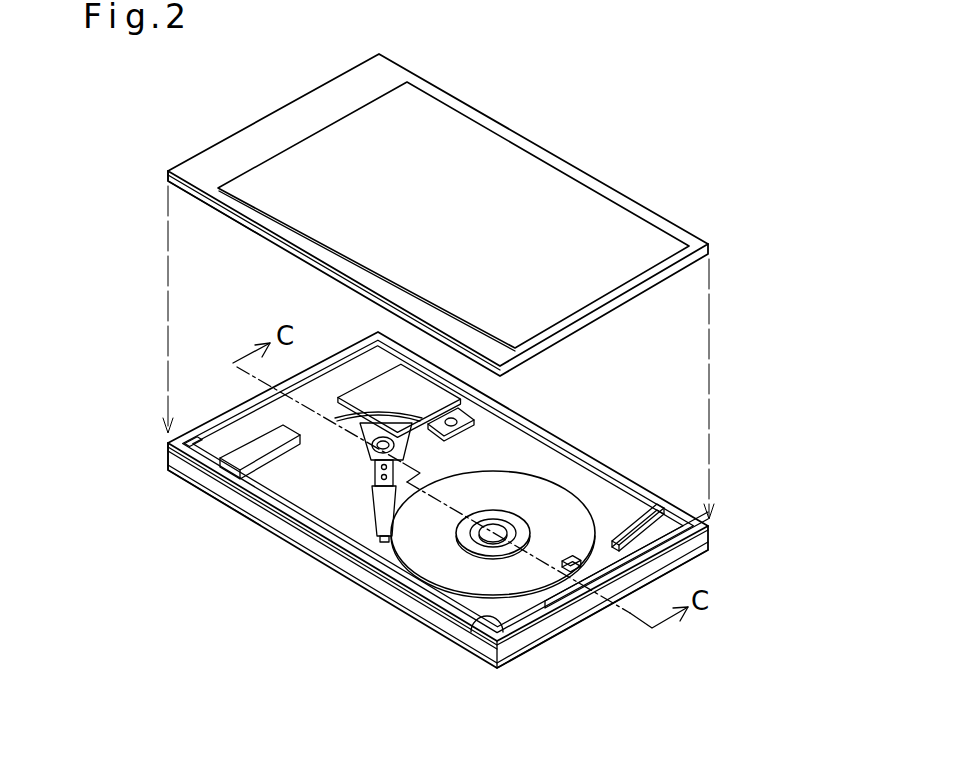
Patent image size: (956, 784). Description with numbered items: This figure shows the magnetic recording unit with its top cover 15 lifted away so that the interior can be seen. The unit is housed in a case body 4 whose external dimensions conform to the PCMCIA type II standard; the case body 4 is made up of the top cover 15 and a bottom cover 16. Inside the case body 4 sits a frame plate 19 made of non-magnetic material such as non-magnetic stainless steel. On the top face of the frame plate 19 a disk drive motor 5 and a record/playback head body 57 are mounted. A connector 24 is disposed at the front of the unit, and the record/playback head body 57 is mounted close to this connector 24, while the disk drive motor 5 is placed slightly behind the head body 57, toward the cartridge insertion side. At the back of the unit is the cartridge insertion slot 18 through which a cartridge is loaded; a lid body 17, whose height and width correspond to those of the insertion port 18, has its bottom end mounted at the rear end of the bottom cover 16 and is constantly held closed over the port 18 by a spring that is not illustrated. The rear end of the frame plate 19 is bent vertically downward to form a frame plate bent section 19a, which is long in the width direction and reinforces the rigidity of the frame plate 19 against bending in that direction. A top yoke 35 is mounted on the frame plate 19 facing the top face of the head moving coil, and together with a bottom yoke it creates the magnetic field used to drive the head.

The case body 4 is at (622, 172).
The top cover 15 is at (187, 160).
The bottom cover 16 is at (190, 472).
The lid body 17 is at (585, 610).
The cartridge insertion slot 18 is at (533, 638).
The frame plate 19 is at (532, 462).
The frame plate bent section 19a is at (470, 622).
The connector 24 is at (375, 413).
The top yoke 35 is at (357, 350).
The record/playback head body 57 is at (358, 480).
The disk drive motor 5 is at (423, 580).